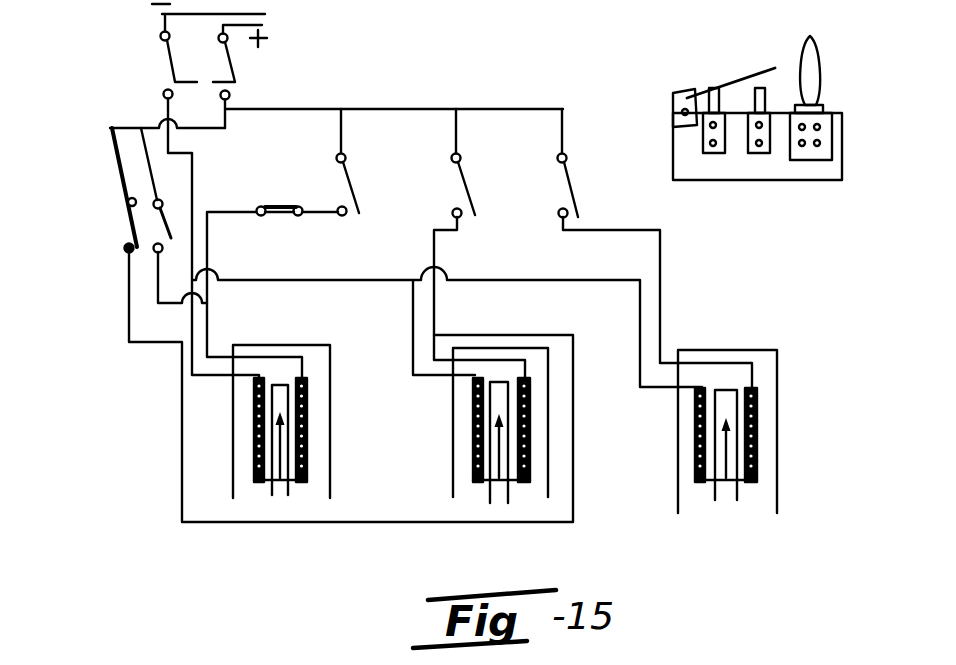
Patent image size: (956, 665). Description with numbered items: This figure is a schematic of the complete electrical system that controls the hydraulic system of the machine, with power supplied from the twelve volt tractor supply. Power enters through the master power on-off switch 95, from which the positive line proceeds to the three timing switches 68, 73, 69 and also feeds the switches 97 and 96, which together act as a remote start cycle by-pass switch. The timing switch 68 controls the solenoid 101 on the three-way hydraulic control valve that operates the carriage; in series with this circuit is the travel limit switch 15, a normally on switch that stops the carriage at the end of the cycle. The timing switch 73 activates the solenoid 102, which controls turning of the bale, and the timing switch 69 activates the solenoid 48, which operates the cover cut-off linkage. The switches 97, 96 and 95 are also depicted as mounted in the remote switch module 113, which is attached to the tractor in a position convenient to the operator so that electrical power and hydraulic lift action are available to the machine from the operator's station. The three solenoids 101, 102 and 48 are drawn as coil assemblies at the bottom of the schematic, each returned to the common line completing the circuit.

The master power on-off switch 95 is at (163, 59).
The remote start cycle by-pass switch 97 is at (124, 205).
The remote start cycle by-pass switch 96 is at (164, 224).
The travel limit switch 15 is at (282, 199).
The timing switch 68 is at (373, 183).
The timing switch 73 is at (490, 185).
The timing switch 69 is at (590, 182).
The remote switch module 113 is at (690, 96).
The solenoid 48 is at (762, 420).
The solenoid 101 is at (235, 487).
The solenoid 102 is at (455, 485).